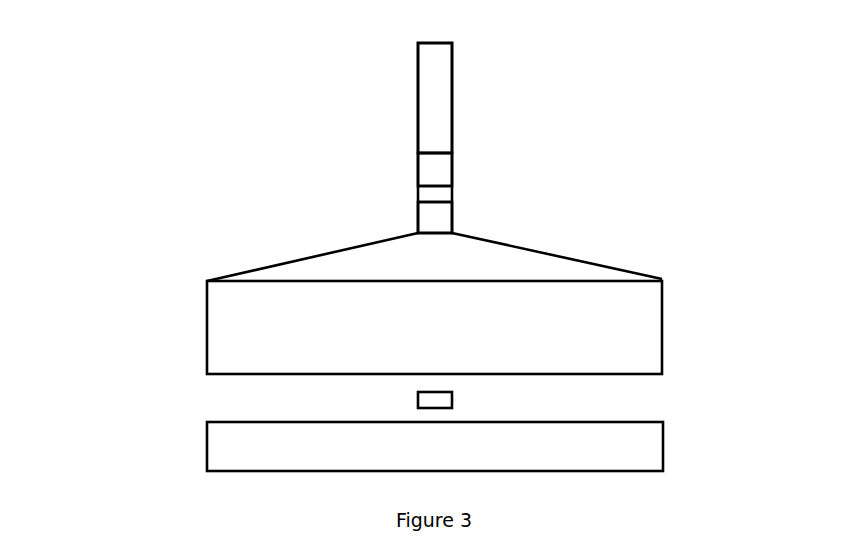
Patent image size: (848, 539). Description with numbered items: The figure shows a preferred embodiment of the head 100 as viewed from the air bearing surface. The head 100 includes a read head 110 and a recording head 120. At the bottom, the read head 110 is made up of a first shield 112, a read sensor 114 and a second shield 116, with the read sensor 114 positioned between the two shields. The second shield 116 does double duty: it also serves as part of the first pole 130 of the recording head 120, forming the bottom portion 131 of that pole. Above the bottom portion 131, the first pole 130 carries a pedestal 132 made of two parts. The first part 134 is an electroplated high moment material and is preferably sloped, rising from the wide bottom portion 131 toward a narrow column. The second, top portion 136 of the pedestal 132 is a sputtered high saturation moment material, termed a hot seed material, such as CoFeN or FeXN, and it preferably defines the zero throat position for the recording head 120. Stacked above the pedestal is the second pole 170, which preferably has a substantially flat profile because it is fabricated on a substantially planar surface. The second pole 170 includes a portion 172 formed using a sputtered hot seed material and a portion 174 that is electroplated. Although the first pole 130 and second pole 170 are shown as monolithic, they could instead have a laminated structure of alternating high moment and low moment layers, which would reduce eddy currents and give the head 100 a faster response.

The head 100 is at (415, 25).
The read head 110 is at (127, 400).
The first shield 112 is at (207, 437).
The read sensor 114 is at (452, 399).
The second shield 116 is at (662, 357).
The recording head 120 is at (94, 187).
The first pole (P1) 130 is at (177, 267).
The bottom portion 131 is at (488, 327).
The pedestal 132 is at (743, 240).
The first part 134 is at (530, 250).
The top portion 136 is at (418, 218).
The second pole (P2) 170 is at (452, 195).
The portion formed using sputtered hot seed material 172 is at (418, 170).
The electroplated portion 174 is at (452, 122).